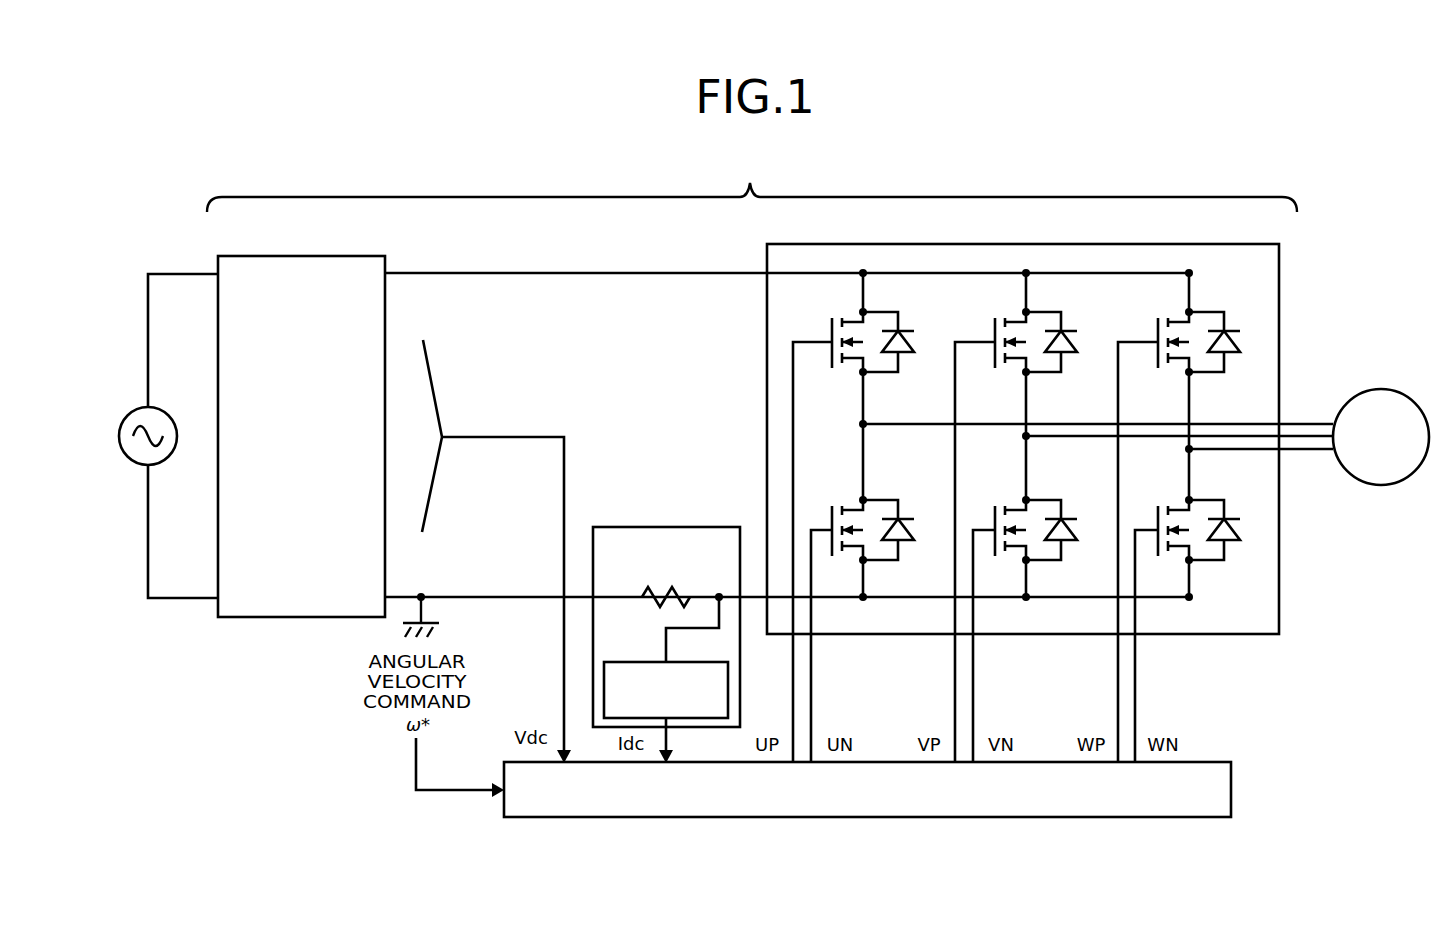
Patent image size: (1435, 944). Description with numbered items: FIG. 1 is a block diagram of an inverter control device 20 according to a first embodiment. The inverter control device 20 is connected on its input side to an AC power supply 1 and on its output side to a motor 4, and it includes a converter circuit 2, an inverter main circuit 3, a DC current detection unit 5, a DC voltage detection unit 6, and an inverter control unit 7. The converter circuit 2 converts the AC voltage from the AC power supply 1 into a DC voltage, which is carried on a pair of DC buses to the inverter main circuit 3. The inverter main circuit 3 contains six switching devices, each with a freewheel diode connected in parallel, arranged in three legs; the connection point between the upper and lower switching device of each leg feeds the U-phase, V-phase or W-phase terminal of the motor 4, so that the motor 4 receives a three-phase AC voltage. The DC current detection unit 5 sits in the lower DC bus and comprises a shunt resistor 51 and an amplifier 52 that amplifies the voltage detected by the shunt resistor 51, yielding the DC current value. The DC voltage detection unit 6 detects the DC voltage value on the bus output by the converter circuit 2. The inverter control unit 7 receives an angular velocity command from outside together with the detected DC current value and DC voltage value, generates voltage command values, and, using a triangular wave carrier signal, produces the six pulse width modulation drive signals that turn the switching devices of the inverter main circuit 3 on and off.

The AC power supply 1 is at (134, 412).
The converter circuit 2 is at (343, 256).
The inverter main circuit 3 is at (1220, 244).
The motor 4 is at (1378, 389).
The DC current detection unit 5 is at (666, 630).
The DC voltage detection unit 6 is at (443, 430).
The inverter control unit 7 is at (1233, 789).
The inverter control device 20 is at (752, 186).
The shunt resistor 51 is at (677, 590).
The amplifier 52 is at (694, 662).